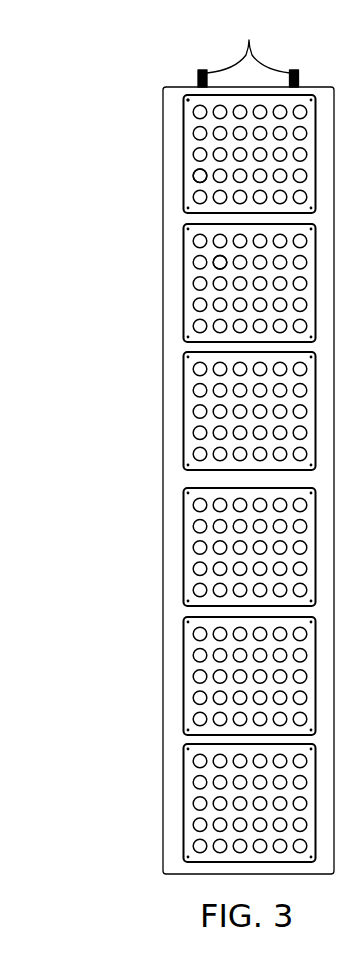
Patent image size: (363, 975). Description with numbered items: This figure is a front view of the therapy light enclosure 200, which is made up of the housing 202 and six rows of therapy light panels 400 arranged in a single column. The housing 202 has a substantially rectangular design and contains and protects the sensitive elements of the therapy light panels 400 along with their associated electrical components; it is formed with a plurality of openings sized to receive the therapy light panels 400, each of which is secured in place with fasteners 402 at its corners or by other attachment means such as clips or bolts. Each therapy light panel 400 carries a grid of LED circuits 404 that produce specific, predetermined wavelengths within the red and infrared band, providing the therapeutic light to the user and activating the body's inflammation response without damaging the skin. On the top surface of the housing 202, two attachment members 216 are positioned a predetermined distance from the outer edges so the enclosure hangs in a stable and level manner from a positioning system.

The therapy light enclosure 200 is at (80, 67).
The housing 202 is at (163, 117).
The attachment members 216 is at (248, 50).
The therapy light panel 400 is at (188, 147).
The fasteners 402 is at (188, 100).
The LED circuits 404 is at (221, 261).